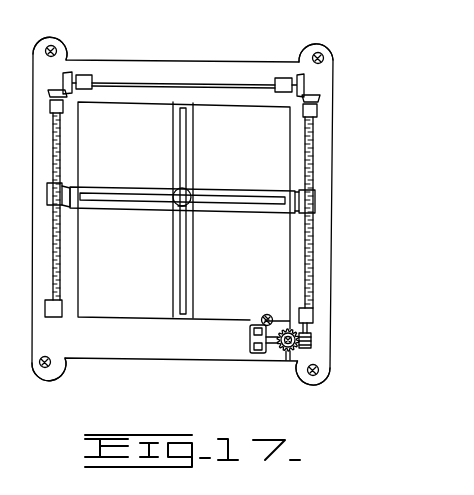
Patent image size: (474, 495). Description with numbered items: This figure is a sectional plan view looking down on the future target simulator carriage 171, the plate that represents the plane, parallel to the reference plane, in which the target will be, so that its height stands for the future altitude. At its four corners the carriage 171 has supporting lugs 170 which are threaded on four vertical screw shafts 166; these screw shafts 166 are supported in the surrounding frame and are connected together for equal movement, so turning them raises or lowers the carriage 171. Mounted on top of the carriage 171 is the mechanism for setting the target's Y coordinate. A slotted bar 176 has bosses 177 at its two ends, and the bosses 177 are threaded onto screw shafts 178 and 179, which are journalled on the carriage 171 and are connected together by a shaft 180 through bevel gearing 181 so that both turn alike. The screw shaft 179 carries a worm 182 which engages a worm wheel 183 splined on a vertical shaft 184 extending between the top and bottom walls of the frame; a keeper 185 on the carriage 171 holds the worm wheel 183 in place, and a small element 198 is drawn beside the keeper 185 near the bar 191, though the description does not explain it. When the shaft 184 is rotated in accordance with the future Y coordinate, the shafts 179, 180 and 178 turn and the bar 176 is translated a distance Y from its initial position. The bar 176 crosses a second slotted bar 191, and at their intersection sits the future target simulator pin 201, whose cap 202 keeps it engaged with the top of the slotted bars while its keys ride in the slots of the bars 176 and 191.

The vertical screw shaft 166 is at (50, 44).
The supporting lug 170 is at (61, 37).
The target simulator carriage 171 is at (142, 61).
The slotted bar 176 is at (242, 188).
The boss 177 is at (63, 188).
The screw shaft 178 is at (62, 155).
The screw shaft 179 is at (314, 162).
The shaft 180 is at (192, 82).
The bevel gearing 181 is at (61, 80).
The worm 182 is at (312, 336).
The worm wheel 183 is at (288, 361).
The shaft 184 is at (297, 324).
The keeper 185 is at (250, 340).
The slotted bar 191 is at (187, 275).
The knob 198 is at (267, 314).
The pin 201 is at (178, 206).
The cap 202 is at (186, 193).